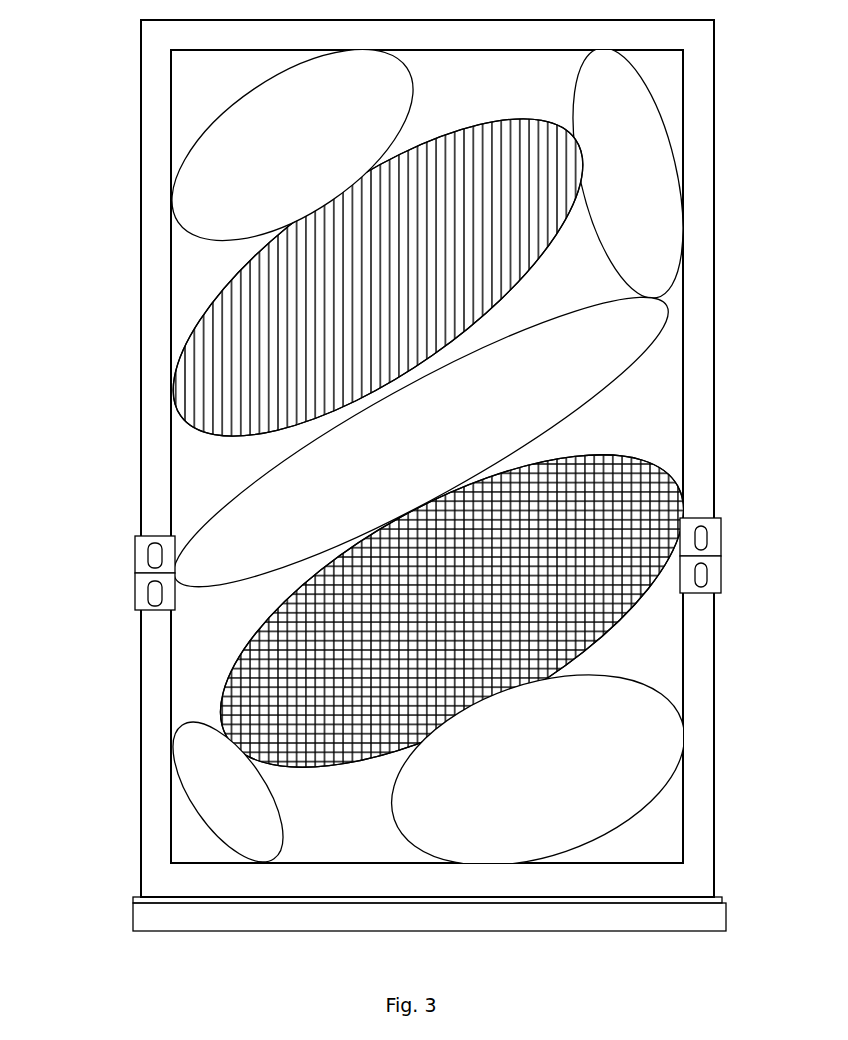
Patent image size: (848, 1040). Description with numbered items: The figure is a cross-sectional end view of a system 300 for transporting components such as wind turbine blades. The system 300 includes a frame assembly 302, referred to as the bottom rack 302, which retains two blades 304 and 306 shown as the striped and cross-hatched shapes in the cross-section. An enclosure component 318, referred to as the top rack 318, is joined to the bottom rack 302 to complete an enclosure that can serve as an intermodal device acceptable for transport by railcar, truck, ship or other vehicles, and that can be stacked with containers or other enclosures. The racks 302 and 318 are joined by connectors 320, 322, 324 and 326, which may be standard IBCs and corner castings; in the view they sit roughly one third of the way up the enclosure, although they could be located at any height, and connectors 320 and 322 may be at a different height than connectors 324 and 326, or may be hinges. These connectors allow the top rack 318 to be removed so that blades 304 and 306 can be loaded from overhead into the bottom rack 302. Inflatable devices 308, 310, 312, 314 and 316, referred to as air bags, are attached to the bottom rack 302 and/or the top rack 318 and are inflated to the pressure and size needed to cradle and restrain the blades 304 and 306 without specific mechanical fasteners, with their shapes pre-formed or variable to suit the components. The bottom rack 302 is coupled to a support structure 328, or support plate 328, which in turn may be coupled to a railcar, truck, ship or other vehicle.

The system 300 is at (104, 843).
The frame assembly 302 is at (142, 670).
The blade 304 is at (677, 482).
The blade 306 is at (198, 313).
The inflatable device 308 is at (665, 748).
The inflatable device 310 is at (178, 738).
The inflatable device 312 is at (212, 555).
The inflatable device 314 is at (668, 188).
The inflatable device 316 is at (212, 133).
The enclosure component 318 is at (716, 327).
The connector 320 is at (135, 595).
The connector 322 is at (135, 557).
The connector 324 is at (721, 568).
The connector 326 is at (721, 528).
The support structure 328 is at (232, 931).